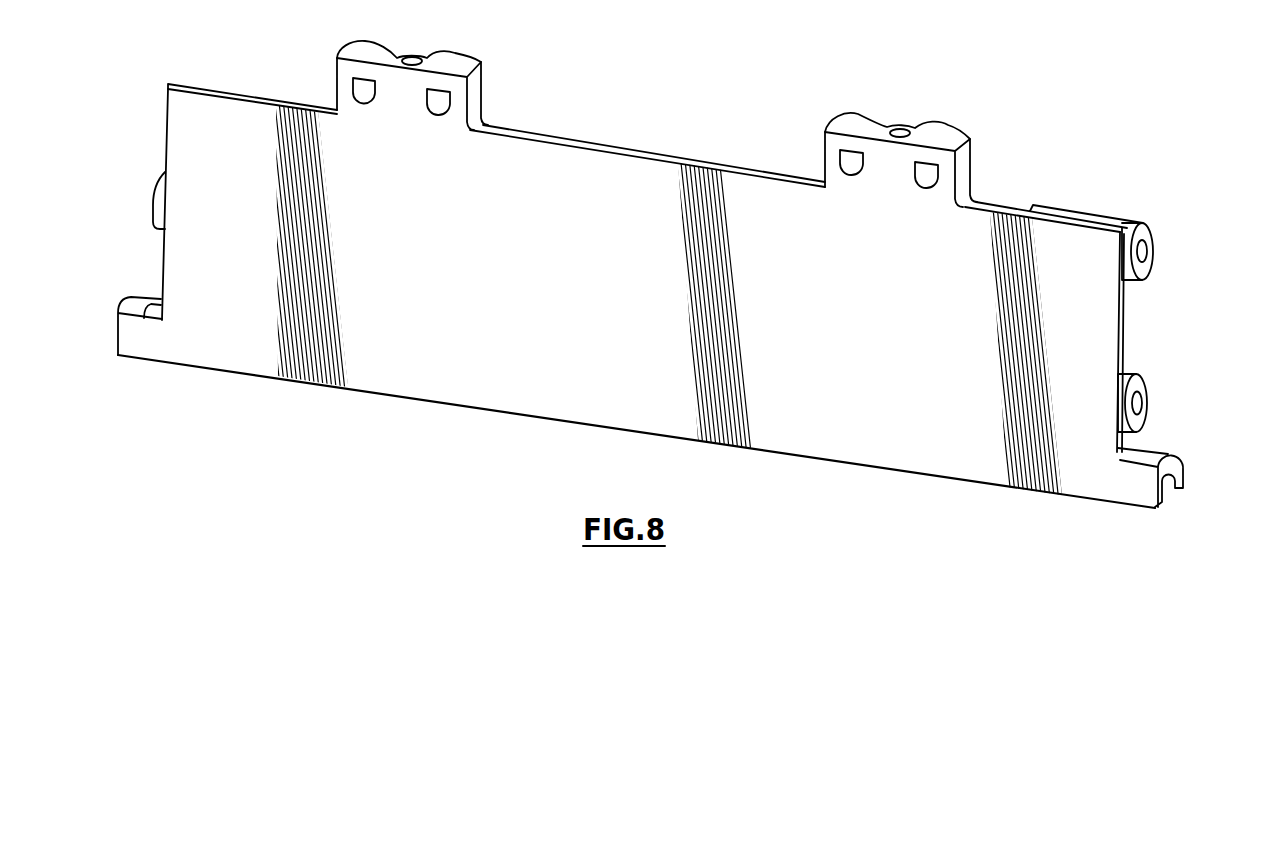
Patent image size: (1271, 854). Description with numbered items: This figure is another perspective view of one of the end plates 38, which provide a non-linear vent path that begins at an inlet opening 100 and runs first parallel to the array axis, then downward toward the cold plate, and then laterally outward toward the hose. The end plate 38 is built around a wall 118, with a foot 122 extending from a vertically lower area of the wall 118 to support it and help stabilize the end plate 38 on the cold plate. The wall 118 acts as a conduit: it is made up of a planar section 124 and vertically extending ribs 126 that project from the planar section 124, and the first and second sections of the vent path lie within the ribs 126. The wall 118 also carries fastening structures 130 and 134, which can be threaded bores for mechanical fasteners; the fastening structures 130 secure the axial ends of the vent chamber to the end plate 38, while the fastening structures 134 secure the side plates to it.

The end plate 38 is at (685, 273).
The inlet opening 100 is at (363, 92).
The wall 118 is at (517, 355).
The foot 122 is at (1158, 458).
The planar section 124 is at (650, 373).
The vertically extending rib 126 is at (941, 137).
The fastening structure 130 is at (903, 129).
The fastening structure 134 is at (1147, 256).